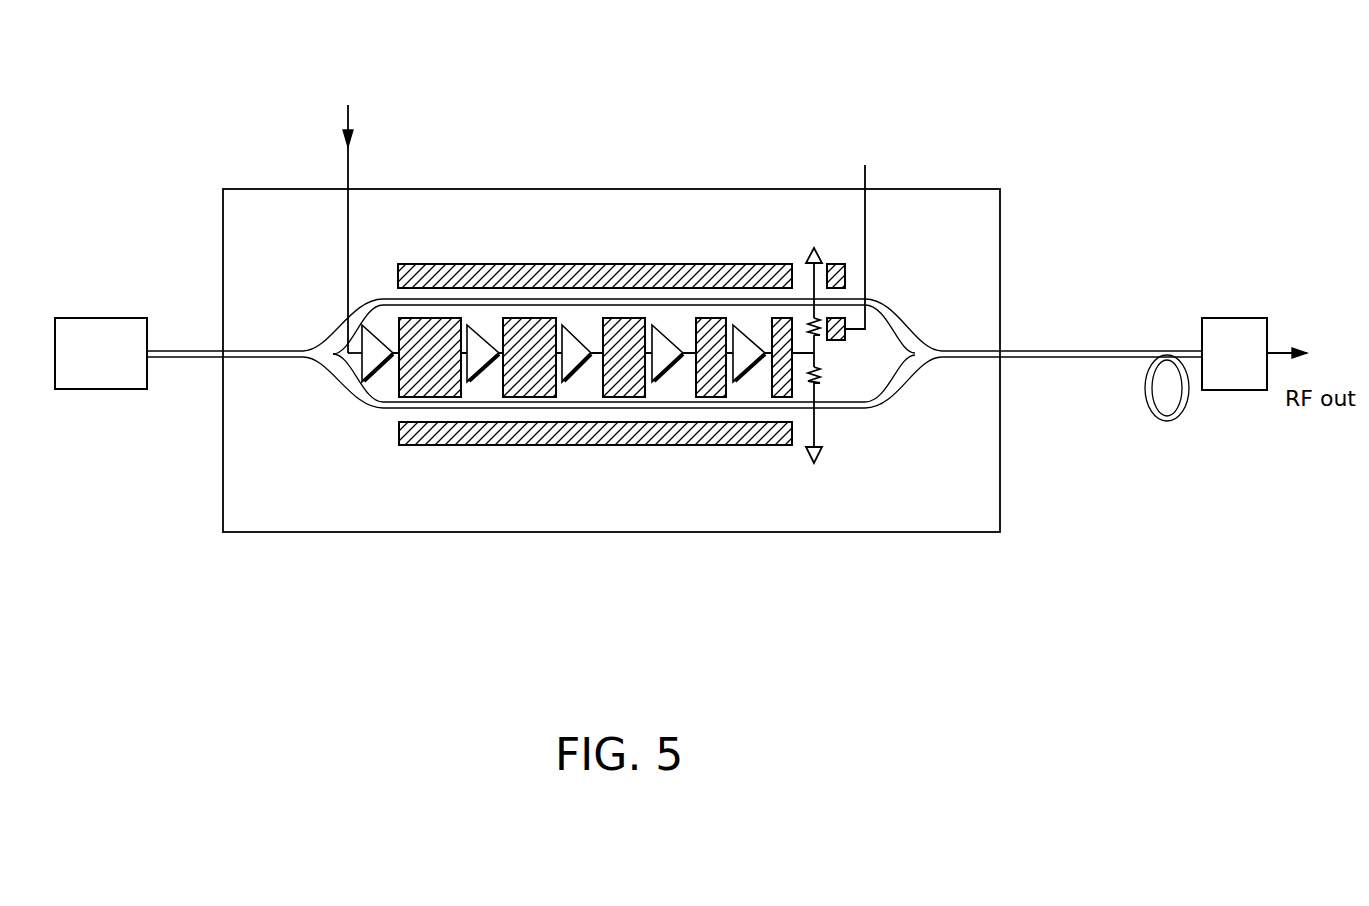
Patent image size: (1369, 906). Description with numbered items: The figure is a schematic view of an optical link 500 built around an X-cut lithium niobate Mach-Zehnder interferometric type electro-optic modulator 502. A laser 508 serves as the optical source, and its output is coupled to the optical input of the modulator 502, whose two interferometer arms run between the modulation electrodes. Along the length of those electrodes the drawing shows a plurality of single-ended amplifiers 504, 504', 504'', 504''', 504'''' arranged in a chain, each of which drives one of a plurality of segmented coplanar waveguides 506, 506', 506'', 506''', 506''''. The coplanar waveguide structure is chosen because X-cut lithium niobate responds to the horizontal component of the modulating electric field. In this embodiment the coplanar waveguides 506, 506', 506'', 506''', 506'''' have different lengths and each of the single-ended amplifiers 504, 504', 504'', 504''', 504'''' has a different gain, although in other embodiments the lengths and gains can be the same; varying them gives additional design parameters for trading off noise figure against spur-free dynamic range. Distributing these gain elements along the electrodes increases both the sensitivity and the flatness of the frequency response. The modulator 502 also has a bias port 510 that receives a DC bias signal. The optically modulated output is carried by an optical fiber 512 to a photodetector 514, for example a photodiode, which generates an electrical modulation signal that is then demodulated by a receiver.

The optical link 500 is at (623, 125).
The electro-optic modulator 502 is at (637, 222).
The single-ended amplifier 504 is at (373, 422).
The single-ended amplifier 504' is at (483, 422).
The single-ended amplifier 504'' is at (580, 422).
The single-ended amplifier 504''' is at (673, 422).
The single-ended amplifier 504'''' is at (757, 422).
The segmented coplanar waveguide 506 is at (430, 313).
The segmented coplanar waveguide 506' is at (530, 313).
The segmented coplanar waveguide 506'' is at (627, 313).
The segmented coplanar waveguide 506''' is at (705, 313).
The segmented coplanar waveguide 506'''' is at (783, 313).
The laser 508 is at (80, 379).
The bias port 510 is at (873, 132).
The optical fiber 512 is at (1167, 425).
The photodetector 514 is at (1213, 379).